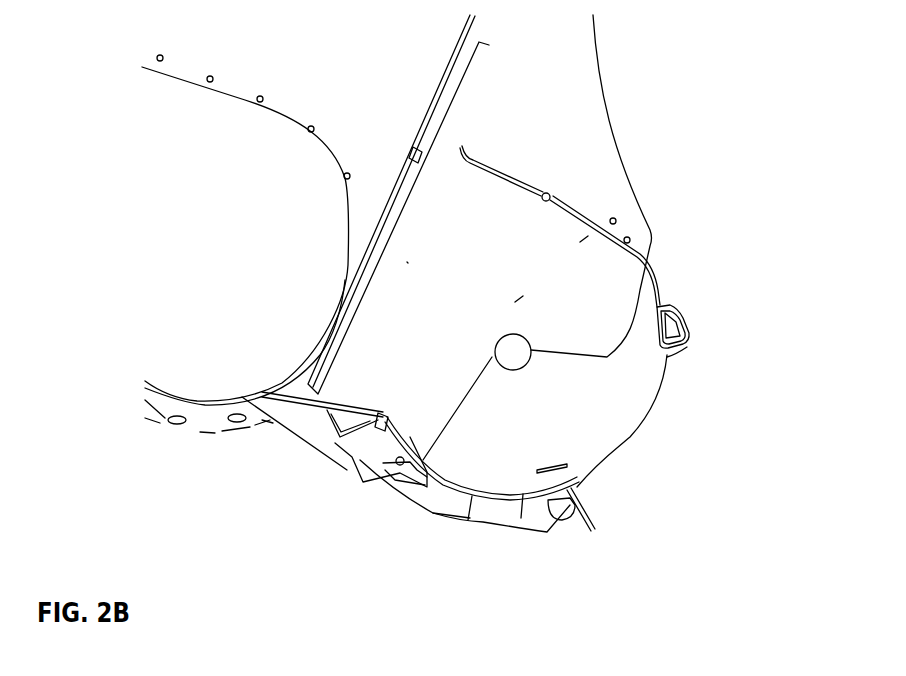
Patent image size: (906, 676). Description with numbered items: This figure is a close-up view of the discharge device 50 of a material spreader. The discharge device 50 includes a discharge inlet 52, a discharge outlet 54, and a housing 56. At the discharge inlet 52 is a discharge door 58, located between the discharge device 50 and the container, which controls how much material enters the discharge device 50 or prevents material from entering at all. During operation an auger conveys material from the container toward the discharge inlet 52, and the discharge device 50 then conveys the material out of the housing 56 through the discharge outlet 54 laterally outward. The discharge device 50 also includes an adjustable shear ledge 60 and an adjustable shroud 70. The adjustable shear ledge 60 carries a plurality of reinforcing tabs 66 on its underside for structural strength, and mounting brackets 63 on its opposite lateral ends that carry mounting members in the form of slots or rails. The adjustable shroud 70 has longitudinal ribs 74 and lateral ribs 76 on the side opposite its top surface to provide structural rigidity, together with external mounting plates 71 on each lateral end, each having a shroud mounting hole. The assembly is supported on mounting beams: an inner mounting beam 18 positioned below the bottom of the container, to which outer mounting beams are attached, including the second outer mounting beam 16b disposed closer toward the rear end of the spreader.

The second outer mounting beam 16b is at (560, 520).
The inner mounting beam 18 is at (300, 425).
The discharge device 50 is at (703, 298).
The discharge inlet 52 is at (382, 298).
The discharge outlet 54 is at (632, 473).
The housing 56 is at (592, 160).
The discharge door 58 is at (378, 243).
The adjustable shear ledge 60 is at (337, 479).
The mounting bracket 63 is at (348, 463).
The reinforcing tab 66 is at (372, 437).
The adjustable shroud 70 is at (450, 514).
The external mounting plate 71 is at (545, 514).
The longitudinal rib 74 is at (498, 508).
The lateral rib 76 is at (475, 496).